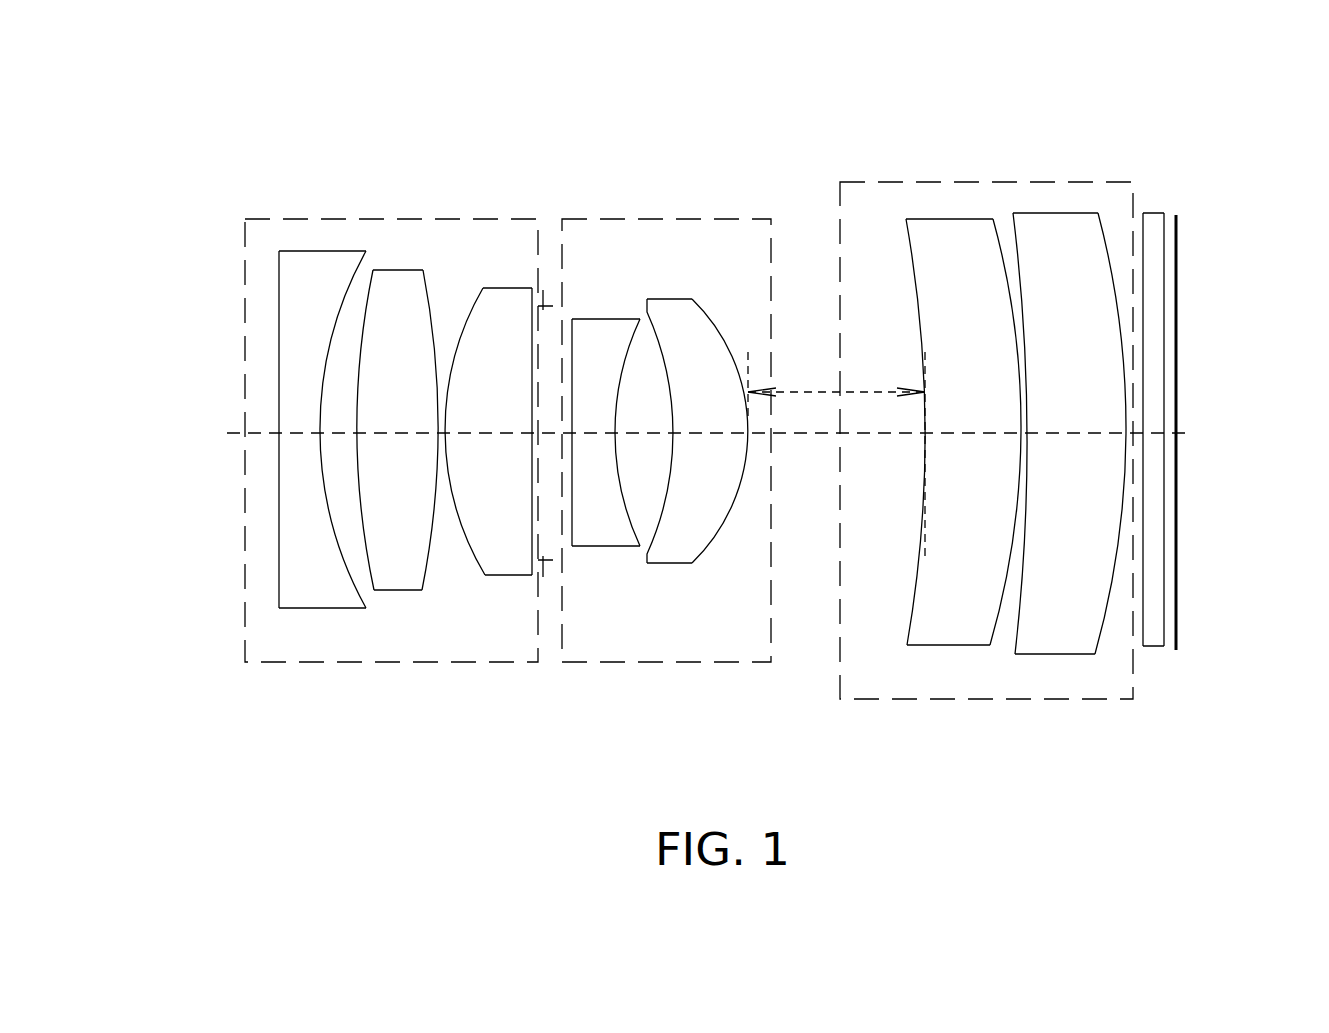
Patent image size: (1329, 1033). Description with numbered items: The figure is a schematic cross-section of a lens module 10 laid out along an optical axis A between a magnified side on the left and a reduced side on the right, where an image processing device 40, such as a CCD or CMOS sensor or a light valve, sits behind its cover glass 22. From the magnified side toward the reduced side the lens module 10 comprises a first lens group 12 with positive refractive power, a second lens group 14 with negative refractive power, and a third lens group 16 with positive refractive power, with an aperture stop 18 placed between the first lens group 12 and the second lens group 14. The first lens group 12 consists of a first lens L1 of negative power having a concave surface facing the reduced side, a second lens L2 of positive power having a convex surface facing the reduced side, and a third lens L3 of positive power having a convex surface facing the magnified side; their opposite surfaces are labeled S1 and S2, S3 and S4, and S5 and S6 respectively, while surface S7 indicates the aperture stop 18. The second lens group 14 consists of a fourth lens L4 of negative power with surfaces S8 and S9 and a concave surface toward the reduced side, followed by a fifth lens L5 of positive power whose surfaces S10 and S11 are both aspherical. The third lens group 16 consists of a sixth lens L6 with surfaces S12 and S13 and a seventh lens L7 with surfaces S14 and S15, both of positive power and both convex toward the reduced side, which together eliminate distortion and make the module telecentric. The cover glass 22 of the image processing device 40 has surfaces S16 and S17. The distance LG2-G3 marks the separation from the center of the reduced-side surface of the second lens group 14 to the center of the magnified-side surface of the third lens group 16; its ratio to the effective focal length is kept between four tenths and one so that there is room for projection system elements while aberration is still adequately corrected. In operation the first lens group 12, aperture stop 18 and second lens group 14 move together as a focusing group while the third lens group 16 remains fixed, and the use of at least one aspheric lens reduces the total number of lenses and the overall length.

The lens module 10 is at (197, 75).
The first lens group 12 is at (412, 202).
The second lens group 14 is at (677, 200).
The third lens group 16 is at (988, 162).
The aperture stop 18 is at (543, 290).
The cover glass 22 is at (1152, 213).
The image processing device 40 is at (1177, 298).
The optical axis A is at (810, 433).
The distance between second and third lens groups LG2-G3 is at (836, 456).
The first lens L1 is at (320, 250).
The second lens L2 is at (373, 270).
The third lens L3 is at (497, 288).
The fourth lens L4 is at (605, 319).
The fifth lens L5 is at (676, 299).
The sixth lens L6 is at (943, 219).
The seventh lens L7 is at (1057, 213).
The surface S1 is at (279, 502).
The surface S2 is at (333, 512).
The surface S3 is at (367, 568).
The surface S4 is at (428, 562).
The surface S5 is at (463, 540).
The surface S6 is at (532, 530).
The surface S7 is at (543, 577).
The surface S8 is at (572, 533).
The surface S9 is at (620, 448).
The surface S10 is at (668, 470).
The surface S11 is at (743, 480).
The surface S12 is at (911, 577).
The surface S13 is at (992, 620).
The surface S14 is at (1020, 603).
The surface S15 is at (1107, 600).
The surface S16 is at (1143, 603).
The surface S17 is at (1165, 643).